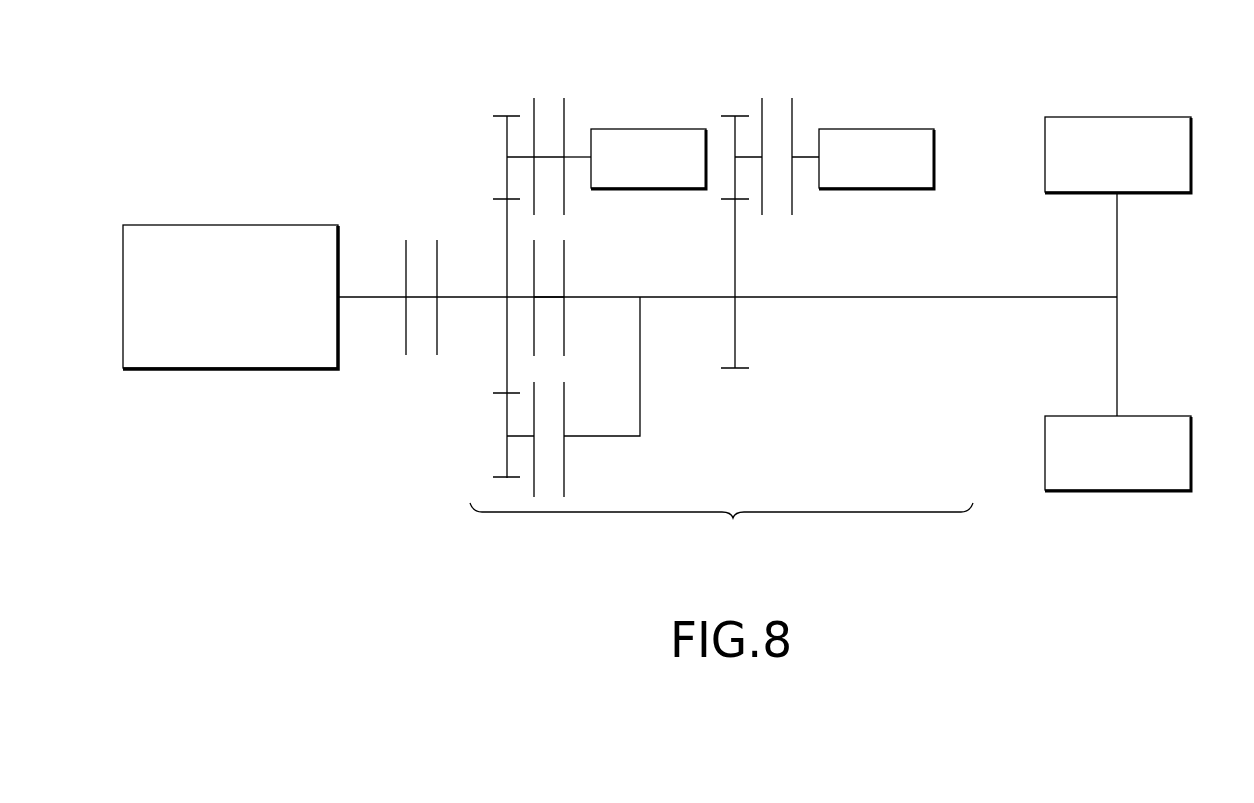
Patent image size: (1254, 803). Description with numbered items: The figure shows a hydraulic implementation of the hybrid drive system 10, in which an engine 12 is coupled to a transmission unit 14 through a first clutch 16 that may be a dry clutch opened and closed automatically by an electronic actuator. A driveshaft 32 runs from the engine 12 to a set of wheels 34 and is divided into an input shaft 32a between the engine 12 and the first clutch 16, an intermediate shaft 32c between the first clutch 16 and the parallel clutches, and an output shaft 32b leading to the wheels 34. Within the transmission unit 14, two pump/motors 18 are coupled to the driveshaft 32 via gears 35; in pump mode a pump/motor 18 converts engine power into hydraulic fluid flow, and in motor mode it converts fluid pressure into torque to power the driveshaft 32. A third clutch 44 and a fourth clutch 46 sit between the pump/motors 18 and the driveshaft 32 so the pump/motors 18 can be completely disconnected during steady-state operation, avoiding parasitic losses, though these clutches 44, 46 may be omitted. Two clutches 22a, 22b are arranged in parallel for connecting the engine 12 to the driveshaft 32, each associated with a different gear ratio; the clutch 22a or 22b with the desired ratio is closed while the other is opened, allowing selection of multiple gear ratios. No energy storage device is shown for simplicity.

The system 10 is at (1128, 65).
The engine 12 is at (273, 369).
The transmission unit 14 is at (732, 518).
The first clutch 16 is at (420, 252).
The pump/motor 18 is at (685, 129).
The clutch 22a is at (552, 241).
The clutch 22b is at (550, 380).
The driveshaft 32 is at (988, 312).
The input shaft 32a is at (372, 297).
The output shaft 32b is at (1085, 298).
The intermediate shaft 32c is at (488, 297).
The wheels 34 is at (1191, 145).
The gears 35 is at (507, 370).
The third clutch 44 is at (551, 100).
The fourth clutch 46 is at (780, 105).